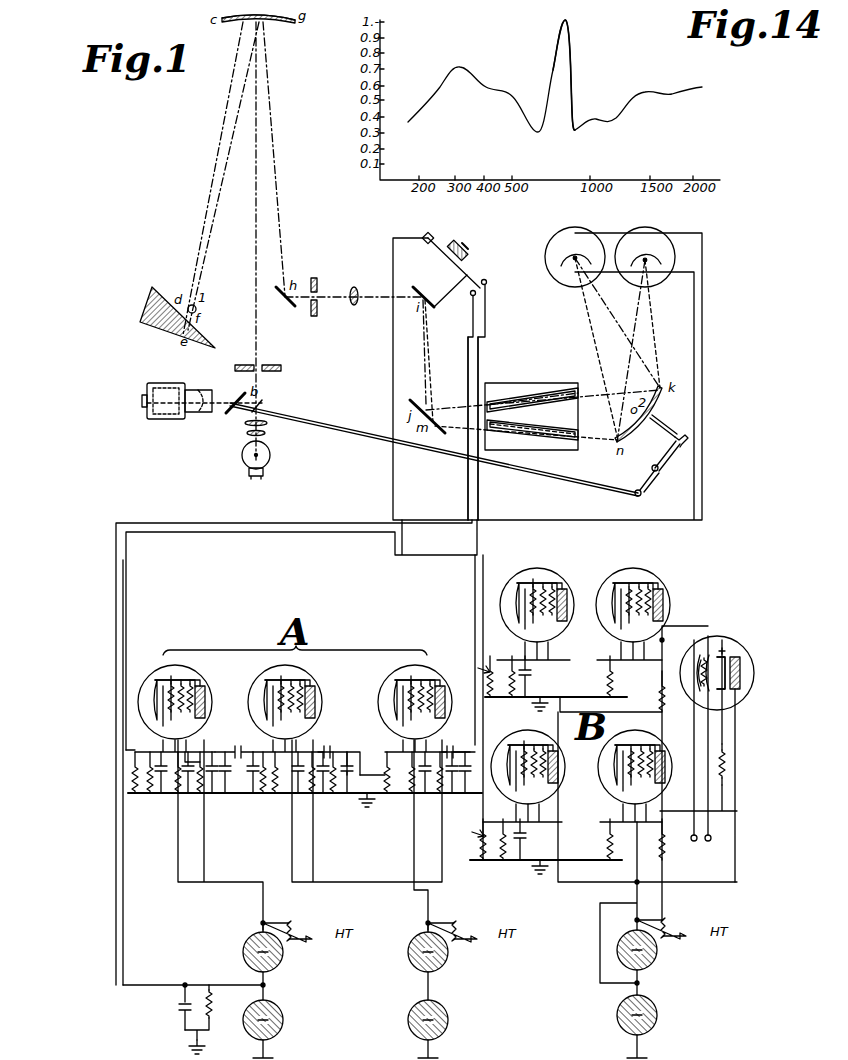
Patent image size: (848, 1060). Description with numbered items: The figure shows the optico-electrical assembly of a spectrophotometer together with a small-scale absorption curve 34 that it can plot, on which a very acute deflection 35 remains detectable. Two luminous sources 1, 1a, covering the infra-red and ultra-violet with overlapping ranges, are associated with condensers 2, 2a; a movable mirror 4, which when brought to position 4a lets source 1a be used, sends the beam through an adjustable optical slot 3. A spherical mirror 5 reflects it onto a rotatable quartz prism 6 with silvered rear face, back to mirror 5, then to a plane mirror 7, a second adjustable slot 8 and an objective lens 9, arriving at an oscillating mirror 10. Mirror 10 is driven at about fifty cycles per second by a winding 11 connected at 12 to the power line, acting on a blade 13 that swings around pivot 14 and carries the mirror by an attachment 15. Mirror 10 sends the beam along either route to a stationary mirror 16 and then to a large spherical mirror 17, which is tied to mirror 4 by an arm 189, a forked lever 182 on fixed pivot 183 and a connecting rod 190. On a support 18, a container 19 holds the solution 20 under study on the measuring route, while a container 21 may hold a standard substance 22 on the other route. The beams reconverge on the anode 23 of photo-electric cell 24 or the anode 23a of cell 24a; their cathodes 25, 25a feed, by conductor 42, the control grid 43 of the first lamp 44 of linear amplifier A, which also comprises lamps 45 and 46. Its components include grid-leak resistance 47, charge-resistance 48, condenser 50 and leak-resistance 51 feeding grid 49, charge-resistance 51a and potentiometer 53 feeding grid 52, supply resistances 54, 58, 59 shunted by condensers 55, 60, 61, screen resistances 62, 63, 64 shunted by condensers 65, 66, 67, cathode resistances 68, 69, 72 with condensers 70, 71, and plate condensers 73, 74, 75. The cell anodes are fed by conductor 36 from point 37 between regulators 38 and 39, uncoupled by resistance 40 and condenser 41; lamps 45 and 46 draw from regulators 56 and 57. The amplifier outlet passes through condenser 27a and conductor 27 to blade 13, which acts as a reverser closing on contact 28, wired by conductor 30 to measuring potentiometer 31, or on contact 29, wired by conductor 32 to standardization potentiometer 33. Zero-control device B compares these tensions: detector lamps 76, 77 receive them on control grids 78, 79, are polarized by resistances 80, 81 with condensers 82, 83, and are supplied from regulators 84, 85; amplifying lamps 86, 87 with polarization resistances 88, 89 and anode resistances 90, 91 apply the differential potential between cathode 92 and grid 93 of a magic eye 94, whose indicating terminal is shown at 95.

In FIG. 1, the luminous source 1 is at (268, 458).
In FIG. 1, the luminous source 1a is at (152, 420).
In FIG. 1, the condenser 2 is at (266, 424).
In FIG. 1, the condenser 2a is at (203, 412).
In FIG. 1, the adjustable optical slot 3 is at (268, 364).
In FIG. 1, the movable mirror 4 is at (240, 394).
In FIG. 1, the mirror position 4a is at (265, 403).
In FIG. 1, the spherical mirror 5 is at (282, 25).
In FIG. 1, the quartz prism 6 is at (168, 330).
In FIG. 1, the plane mirror 7 is at (285, 298).
In FIG. 1, the adjustable slot 8 is at (317, 308).
In FIG. 1, the objective lens 9 is at (354, 306).
In FIG. 1, the oscillating mirror 10 is at (423, 287).
In FIG. 1, the winding 11 is at (468, 250).
In FIG. 1, the power line connection 12 is at (462, 240).
In FIG. 1, the blade 13 is at (475, 283).
In FIG. 1, the pivot 14 is at (440, 230).
In FIG. 1, the attachment 15 is at (456, 288).
In FIG. 1, the stationary mirror 16 is at (434, 435).
In FIG. 1, the large spherical mirror 17 is at (647, 430).
In FIG. 1, the support 18 is at (532, 448).
In FIG. 1, the container 19 is at (553, 384).
In FIG. 1, the solution 20 is at (505, 392).
In FIG. 1, the container 21 is at (556, 448).
In FIG. 1, the standard substance 22 is at (508, 435).
In FIG. 1, the anode 23 is at (578, 260).
In FIG. 1, the anode 23a is at (647, 265).
In FIG. 1, the photo-electric cell 24 is at (554, 248).
In FIG. 1, the photo-electric cell 24a is at (632, 234).
In FIG. 1, the cathode 25 is at (558, 260).
In FIG. 1, the cathode 25a is at (660, 250).
In FIG. 1, the conductor 27 is at (393, 455).
In FIG. 1, the condenser 27a is at (455, 746).
In FIG. 1, the contact 28 is at (471, 296).
In FIG. 1, the contact 29 is at (487, 283).
In FIG. 1, the conductor 30 is at (480, 497).
In FIG. 1, the measuring potentiometer 31 is at (493, 697).
In FIG. 1, the conductor 32 is at (468, 490).
In FIG. 1, the standardization potentiometer 33 is at (480, 848).
In FIG. 14, the absorption curve 34 is at (480, 77).
In FIG. 14, the acute deflection 35 is at (571, 78).
In FIG. 1, the conductor 36 is at (123, 845).
In FIG. 1, the connection point 37 is at (266, 984).
In FIG. 1, the regulator 38 is at (284, 954).
In FIG. 1, the regulator 39 is at (283, 1016).
In FIG. 1, the resistance 40 is at (214, 1006).
In FIG. 1, the condenser 41 is at (180, 1011).
In FIG. 1, the conductor 42 is at (122, 632).
In FIG. 1, the control grid 43 is at (171, 684).
In FIG. 1, the first lamp 44 is at (198, 674).
In FIG. 1, the second lamp 45 is at (310, 672).
In FIG. 1, the third lamp 46 is at (438, 672).
In FIG. 1, the resistance 47 is at (135, 760).
In FIG. 1, the charge-resistance 48 is at (212, 762).
In FIG. 1, the grid 49 is at (281, 684).
In FIG. 1, the condenser 50 is at (238, 746).
In FIG. 1, the leak-resistance 51 is at (275, 795).
In FIG. 1, the charge-resistance 51a is at (330, 746).
In FIG. 1, the grid 52 is at (411, 684).
In FIG. 1, the potentiometer 53 is at (340, 760).
In FIG. 1, the resistance 54 is at (188, 795).
In FIG. 1, the condenser 55 is at (202, 795).
In FIG. 1, the regulator 56 is at (446, 958).
In FIG. 1, the regulator 57 is at (446, 1008).
In FIG. 1, the resistance 58 is at (323, 795).
In FIG. 1, the resistance 59 is at (414, 795).
In FIG. 1, the condenser 60 is at (344, 796).
In FIG. 1, the condenser 61 is at (441, 795).
In FIG. 1, the resistance 62 is at (178, 795).
In FIG. 1, the resistance 63 is at (298, 795).
In FIG. 1, the resistance 64 is at (370, 800).
In FIG. 1, the condenser 65 is at (198, 768).
In FIG. 1, the condenser 66 is at (312, 760).
In FIG. 1, the condenser 67 is at (428, 764).
In FIG. 1, the resistance 68 is at (150, 795).
In FIG. 1, the resistance 69 is at (263, 795).
In FIG. 1, the condenser 70 is at (161, 795).
In FIG. 1, the condenser 71 is at (250, 775).
In FIG. 1, the resistance 72 is at (390, 775).
In FIG. 1, the condenser 73 is at (226, 795).
In FIG. 1, the condenser 74 is at (353, 778).
In FIG. 1, the condenser 75 is at (454, 796).
In FIG. 1, the detector lamp 76 is at (548, 570).
In FIG. 1, the detector lamp 77 is at (564, 776).
In FIG. 1, the control grid 78 is at (533, 587).
In FIG. 1, the control grid 79 is at (524, 749).
In FIG. 1, the resistance 80 is at (514, 697).
In FIG. 1, the resistance 81 is at (504, 860).
In FIG. 1, the condenser 82 is at (533, 680).
In FIG. 1, the condenser 83 is at (528, 843).
In FIG. 1, the regulator 84 is at (654, 958).
In FIG. 1, the regulator 85 is at (652, 1005).
In FIG. 1, the amplifying lamp 86 is at (662, 578).
In FIG. 1, the amplifying lamp 87 is at (662, 740).
In FIG. 1, the polarization resistance 88 is at (606, 677).
In FIG. 1, the polarization resistance 89 is at (606, 845).
In FIG. 1, the resistance 90 is at (660, 695).
In FIG. 1, the resistance 91 is at (666, 848).
In FIG. 1, the cathode 92 is at (698, 663).
In FIG. 1, the grid 93 is at (723, 658).
In FIG. 1, the magic eye 94 is at (738, 648).
In FIG. 1, the anode terminal 95 is at (725, 648).
In FIG. 1, the forked lever 182 is at (648, 492).
In FIG. 1, the fixed pivot 183 is at (658, 470).
In FIG. 1, the arm 189 is at (665, 428).
In FIG. 1, the connecting rod 190 is at (345, 434).